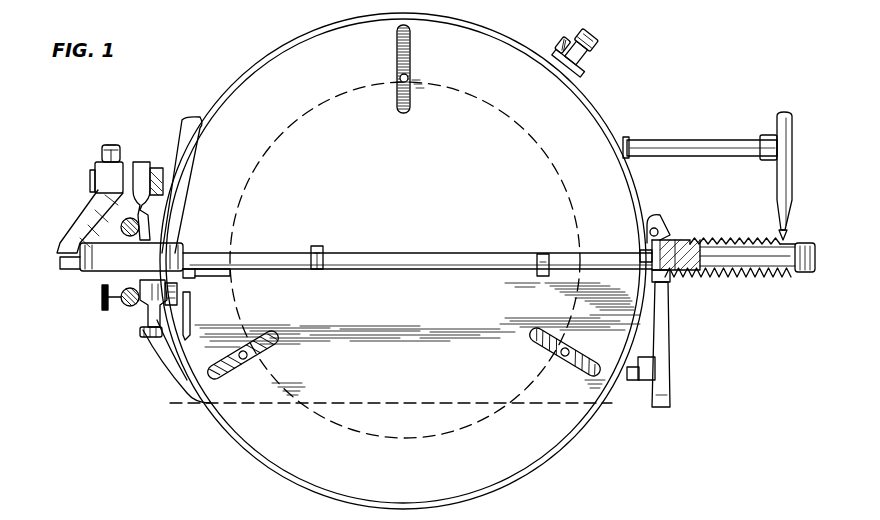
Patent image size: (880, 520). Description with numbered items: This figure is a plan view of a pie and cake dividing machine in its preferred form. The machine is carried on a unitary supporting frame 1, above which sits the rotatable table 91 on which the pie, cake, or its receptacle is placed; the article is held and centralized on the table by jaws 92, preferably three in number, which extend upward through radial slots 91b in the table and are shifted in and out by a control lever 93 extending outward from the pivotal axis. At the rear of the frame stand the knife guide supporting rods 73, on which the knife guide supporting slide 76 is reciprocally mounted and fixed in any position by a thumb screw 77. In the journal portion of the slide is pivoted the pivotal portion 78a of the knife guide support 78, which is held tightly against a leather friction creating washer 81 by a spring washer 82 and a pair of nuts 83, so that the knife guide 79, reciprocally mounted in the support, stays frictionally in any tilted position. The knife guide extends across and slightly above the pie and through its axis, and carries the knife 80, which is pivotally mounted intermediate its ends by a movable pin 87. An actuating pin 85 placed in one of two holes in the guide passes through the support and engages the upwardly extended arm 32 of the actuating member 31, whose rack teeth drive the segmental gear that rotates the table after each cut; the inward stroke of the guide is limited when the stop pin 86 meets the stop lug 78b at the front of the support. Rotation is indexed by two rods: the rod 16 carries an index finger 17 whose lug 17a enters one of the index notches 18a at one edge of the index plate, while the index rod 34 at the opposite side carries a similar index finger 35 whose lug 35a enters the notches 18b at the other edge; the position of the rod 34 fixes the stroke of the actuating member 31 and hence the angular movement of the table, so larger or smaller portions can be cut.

The supporting frame 1 is at (182, 130).
The rod 16 is at (645, 382).
The index finger 17 is at (672, 362).
The lug 17a is at (670, 280).
The index notches 18a is at (770, 278).
The notches 18b is at (742, 238).
The actuating member 31 is at (163, 168).
The arm 32 is at (82, 208).
The index rod 34 is at (738, 144).
The index finger 35 is at (790, 178).
The lug 35a is at (790, 236).
The knife guide supporting rods 73 is at (118, 228).
The knife guide supporting slide 76 is at (165, 240).
The thumb screw 77 is at (100, 300).
The knife guide support 78 is at (100, 277).
The pivotal portion 78a is at (145, 337).
The stop lug 78b is at (215, 276).
The knife guide 79 is at (416, 253).
The knife 80 is at (668, 250).
The friction creating washer 81 is at (195, 277).
The spring washer 82 is at (177, 300).
The nuts 83 is at (186, 335).
The actuating pin 85 is at (325, 238).
The stop pin 86 is at (537, 272).
The movable pin 87 is at (640, 250).
The table 91 is at (500, 62).
The radial slots 91b is at (216, 400).
The jaws 92 is at (403, 82).
The control lever 93 is at (600, 47).